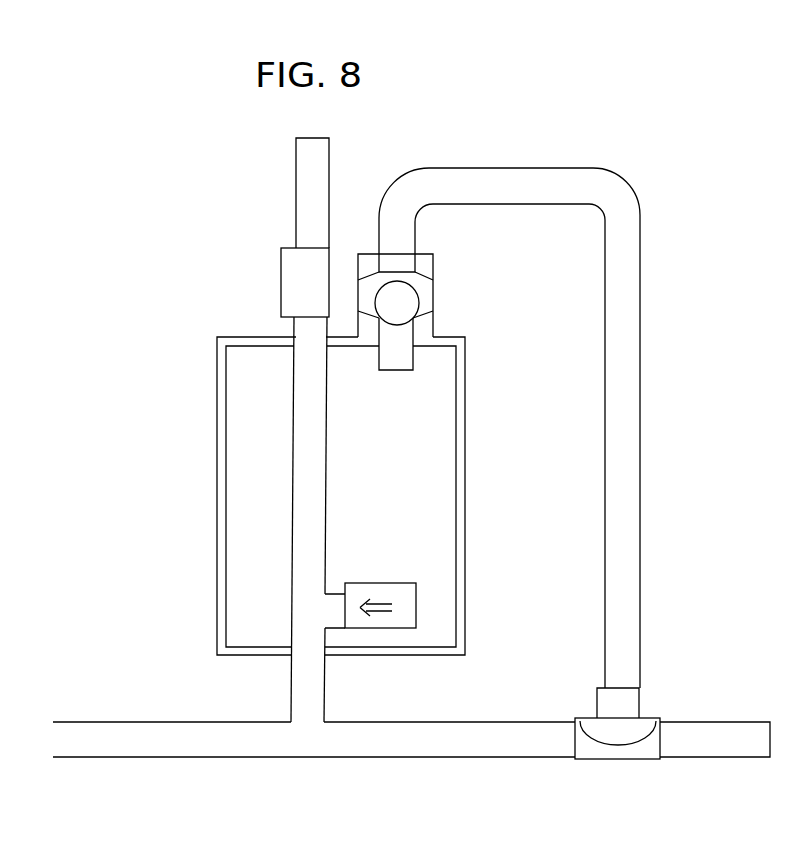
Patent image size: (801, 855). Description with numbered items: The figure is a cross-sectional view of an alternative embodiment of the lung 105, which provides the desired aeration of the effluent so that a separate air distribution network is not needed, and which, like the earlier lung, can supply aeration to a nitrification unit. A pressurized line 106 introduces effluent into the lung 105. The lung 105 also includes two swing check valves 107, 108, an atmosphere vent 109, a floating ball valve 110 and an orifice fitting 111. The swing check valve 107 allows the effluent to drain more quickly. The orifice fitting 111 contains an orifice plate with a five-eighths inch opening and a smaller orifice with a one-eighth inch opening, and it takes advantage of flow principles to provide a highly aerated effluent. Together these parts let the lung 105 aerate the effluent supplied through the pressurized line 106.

The lung 105 is at (463, 457).
The pressurized line 106 is at (160, 733).
The swing check valve 107 is at (367, 592).
The swing check valve 108 is at (283, 269).
The atmosphere vent 109 is at (306, 166).
The floating ball valve 110 is at (405, 308).
The orifice fitting 111 is at (640, 723).